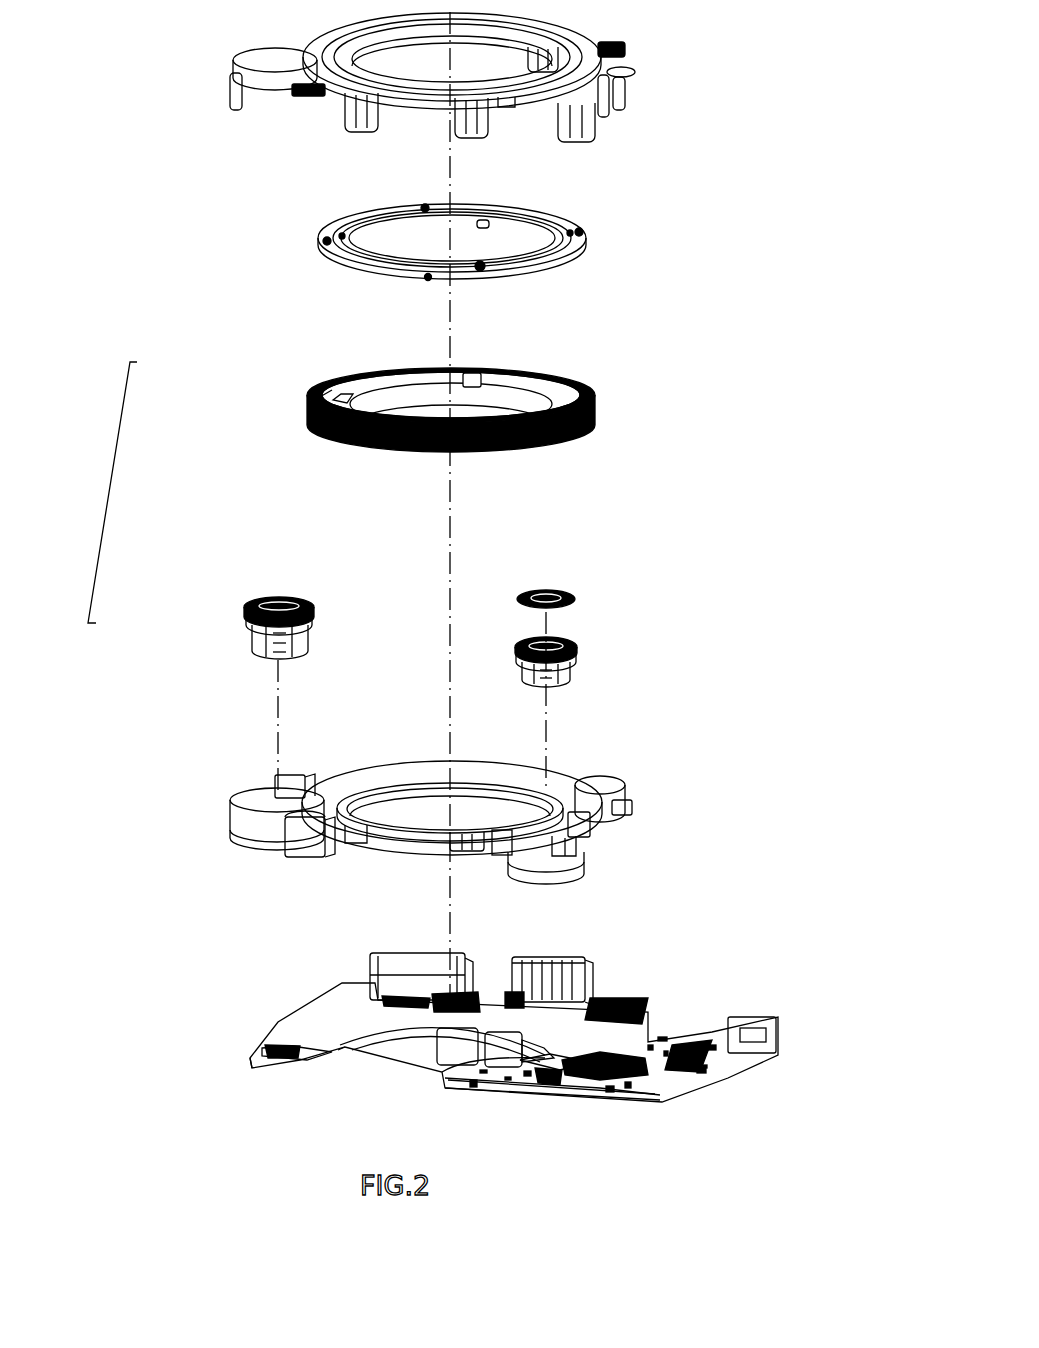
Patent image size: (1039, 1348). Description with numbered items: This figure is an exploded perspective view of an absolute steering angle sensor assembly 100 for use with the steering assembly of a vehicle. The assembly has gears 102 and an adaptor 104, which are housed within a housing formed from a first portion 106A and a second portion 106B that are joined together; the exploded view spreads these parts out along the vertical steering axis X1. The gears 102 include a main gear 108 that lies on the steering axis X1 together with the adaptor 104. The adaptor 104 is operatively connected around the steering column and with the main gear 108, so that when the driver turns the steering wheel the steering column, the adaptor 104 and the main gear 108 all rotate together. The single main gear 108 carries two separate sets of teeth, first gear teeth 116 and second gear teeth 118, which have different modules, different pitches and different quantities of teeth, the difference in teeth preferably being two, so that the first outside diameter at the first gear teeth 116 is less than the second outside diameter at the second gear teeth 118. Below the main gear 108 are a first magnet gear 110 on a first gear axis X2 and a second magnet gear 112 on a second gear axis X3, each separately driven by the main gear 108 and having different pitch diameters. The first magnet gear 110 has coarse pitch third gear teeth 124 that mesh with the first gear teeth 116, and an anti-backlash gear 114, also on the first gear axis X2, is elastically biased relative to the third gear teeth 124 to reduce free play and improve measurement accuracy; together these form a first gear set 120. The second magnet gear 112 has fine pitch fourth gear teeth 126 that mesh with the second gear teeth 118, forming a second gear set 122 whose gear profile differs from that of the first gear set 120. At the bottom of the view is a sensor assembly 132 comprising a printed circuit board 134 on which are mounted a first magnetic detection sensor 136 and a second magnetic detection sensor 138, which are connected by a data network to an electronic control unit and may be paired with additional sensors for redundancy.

The absolute steering angle sensor assembly 100 is at (669, 203).
The gears 102 is at (108, 493).
The adaptor 104 is at (580, 252).
The first housing portion 106A is at (590, 71).
The second housing portion 106B is at (248, 831).
The main gear 108 is at (484, 385).
The first magnet gear 110 is at (578, 676).
The second magnet gear 112 is at (252, 638).
The anti-backlash gear 114 is at (575, 596).
The first gear teeth 116 is at (550, 442).
The second gear teeth 118 is at (311, 406).
The first gear set 120 is at (658, 608).
The second gear set 122 is at (201, 505).
The third gear teeth 124 is at (588, 648).
The fourth gear teeth 126 is at (247, 605).
The sensor assembly 132 is at (267, 997).
The printed circuit board 134 is at (462, 1089).
The first magnetic detection sensor 136 is at (548, 1083).
The second magnetic detection sensor 138 is at (290, 1050).
The steering axis X1 is at (449, 185).
The first gear axis X2 is at (547, 722).
The second gear axis X3 is at (271, 731).